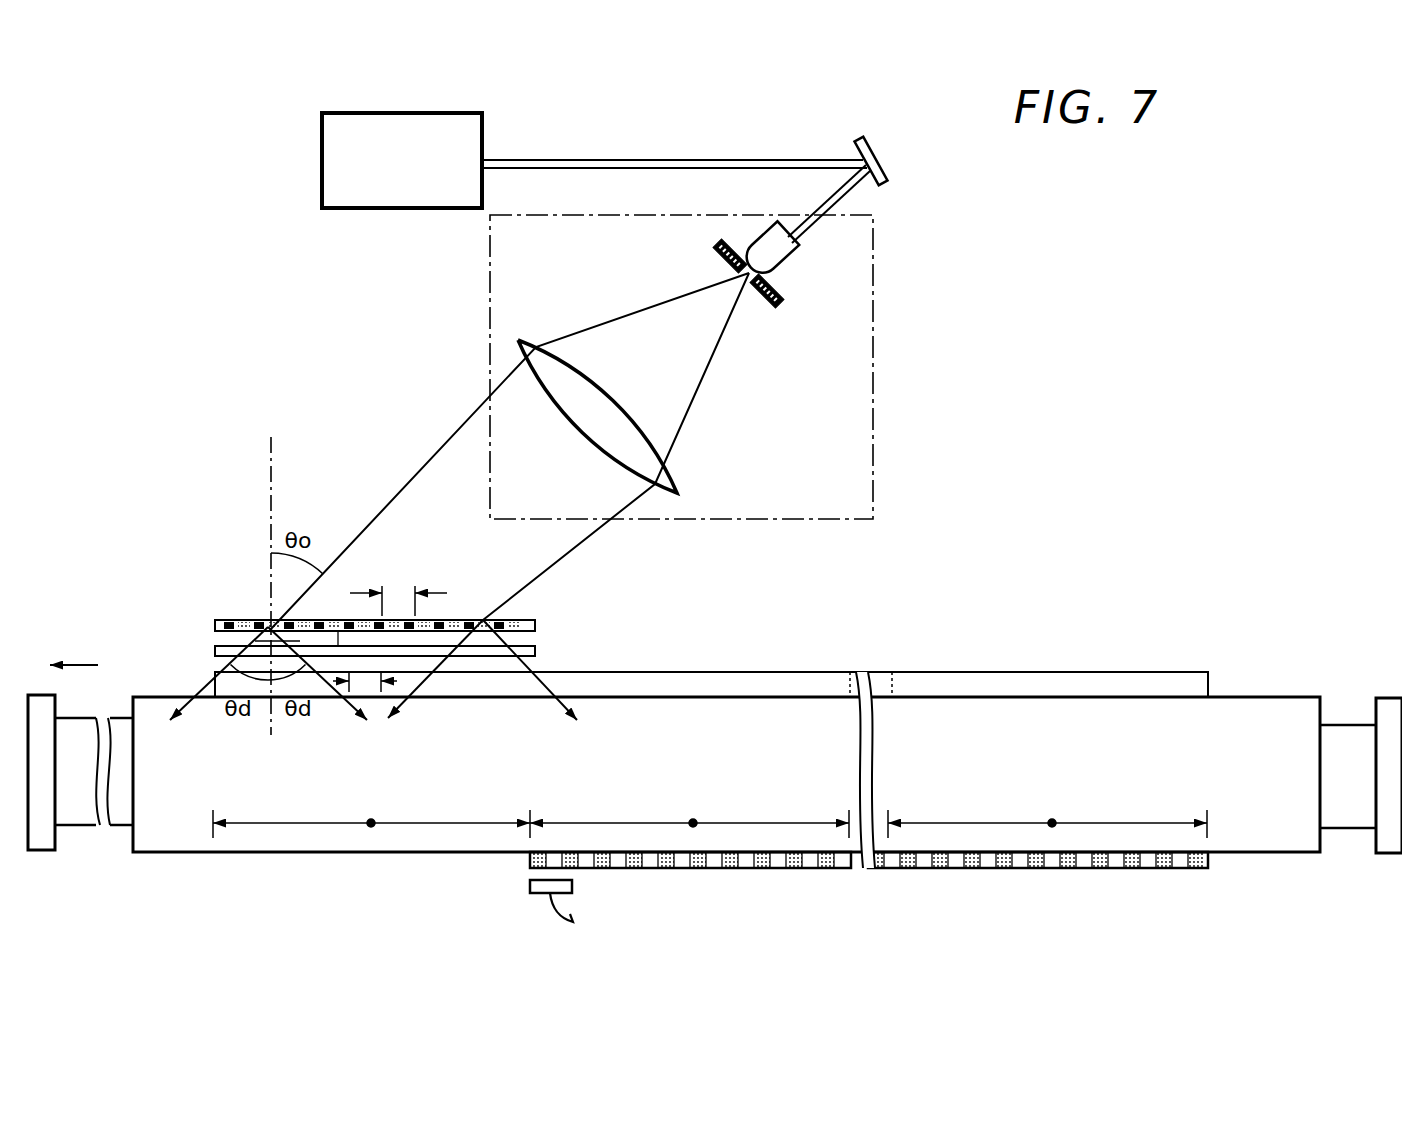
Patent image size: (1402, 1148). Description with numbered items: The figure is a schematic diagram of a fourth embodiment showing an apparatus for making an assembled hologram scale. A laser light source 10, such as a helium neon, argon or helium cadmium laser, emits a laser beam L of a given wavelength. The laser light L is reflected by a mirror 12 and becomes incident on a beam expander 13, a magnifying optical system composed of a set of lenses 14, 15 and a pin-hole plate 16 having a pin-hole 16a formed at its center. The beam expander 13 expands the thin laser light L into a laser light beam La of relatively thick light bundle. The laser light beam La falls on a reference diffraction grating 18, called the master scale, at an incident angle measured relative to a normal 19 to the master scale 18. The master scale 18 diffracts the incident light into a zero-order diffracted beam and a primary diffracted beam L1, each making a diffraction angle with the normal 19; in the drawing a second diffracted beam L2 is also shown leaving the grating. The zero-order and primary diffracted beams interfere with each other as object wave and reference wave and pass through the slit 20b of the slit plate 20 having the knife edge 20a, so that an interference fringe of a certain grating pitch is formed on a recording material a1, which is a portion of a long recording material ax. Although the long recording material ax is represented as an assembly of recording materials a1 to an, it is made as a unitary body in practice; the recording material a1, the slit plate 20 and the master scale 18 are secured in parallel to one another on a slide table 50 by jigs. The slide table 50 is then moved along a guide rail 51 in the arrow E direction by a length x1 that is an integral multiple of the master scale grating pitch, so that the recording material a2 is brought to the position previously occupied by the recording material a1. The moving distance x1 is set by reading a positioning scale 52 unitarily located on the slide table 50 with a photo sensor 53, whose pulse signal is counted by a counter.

The laser light source 10 is at (407, 209).
The mirror 12 is at (882, 160).
The beam expander 13 is at (877, 273).
The lens 14 is at (784, 254).
The lens 15 is at (680, 484).
The pin-hole plate 16 is at (783, 302).
The pin-hole 16a is at (740, 275).
The reference diffraction grating (master scale) 18 is at (537, 623).
The normal 19 is at (269, 448).
The slit plate 20 is at (537, 652).
The knife edge 20a is at (255, 641).
The slit 20b is at (339, 630).
The slide table 50 is at (160, 853).
The guide rail 51 is at (90, 826).
The positioning scale 52 is at (1160, 870).
The photo sensor 53 is at (528, 885).
The laser beam L is at (677, 158).
The laser light beam La is at (432, 456).
The primary diffracted beam L1 is at (341, 700).
The second diffracted light L2 is at (196, 700).
The arrow direction E is at (85, 662).
The long recording material ax is at (1122, 671).
The recording material a1 is at (466, 688).
The recording material a2 is at (717, 690).
The recording material an is at (982, 690).
The length (moving distance) x1 is at (710, 816).